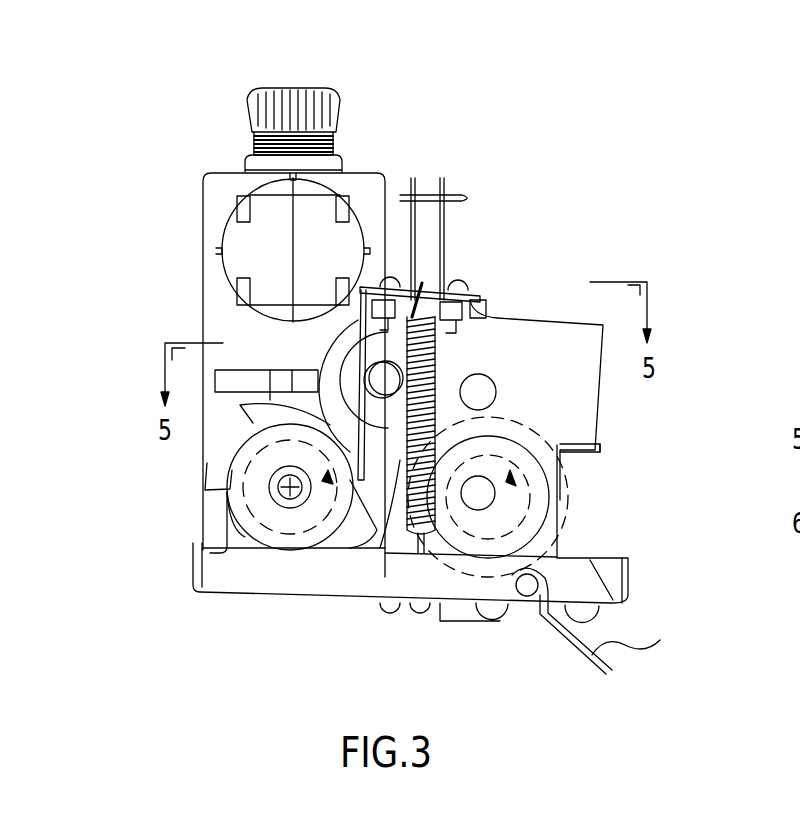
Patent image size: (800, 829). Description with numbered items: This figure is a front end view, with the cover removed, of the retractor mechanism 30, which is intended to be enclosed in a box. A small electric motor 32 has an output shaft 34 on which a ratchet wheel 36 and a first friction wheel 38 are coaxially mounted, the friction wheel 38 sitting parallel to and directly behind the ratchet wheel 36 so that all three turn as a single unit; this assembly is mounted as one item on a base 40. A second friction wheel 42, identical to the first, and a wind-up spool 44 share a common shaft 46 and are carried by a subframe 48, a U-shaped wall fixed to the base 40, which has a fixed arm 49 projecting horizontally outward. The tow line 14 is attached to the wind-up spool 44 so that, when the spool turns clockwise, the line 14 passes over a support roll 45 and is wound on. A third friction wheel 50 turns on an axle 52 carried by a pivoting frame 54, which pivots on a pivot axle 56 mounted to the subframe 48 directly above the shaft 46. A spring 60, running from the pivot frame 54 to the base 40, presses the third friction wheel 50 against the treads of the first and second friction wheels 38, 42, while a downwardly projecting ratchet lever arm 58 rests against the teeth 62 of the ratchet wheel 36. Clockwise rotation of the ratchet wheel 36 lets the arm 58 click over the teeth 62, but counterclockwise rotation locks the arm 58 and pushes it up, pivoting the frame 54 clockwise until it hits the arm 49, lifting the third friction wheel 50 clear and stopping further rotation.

The tow line 14 is at (632, 646).
The retractor mechanism 30 is at (463, 74).
The electric motor 32 is at (223, 172).
The output shaft 34 is at (288, 500).
The ratchet wheel 36 is at (212, 478).
The first friction wheel 38 is at (198, 453).
The base 40 is at (310, 595).
The second friction wheel 42 is at (560, 535).
The wind-up spool 44 is at (560, 485).
The support roll 45 is at (520, 610).
The common shaft 46 is at (475, 503).
The subframe 48 is at (560, 553).
The fixed arm 49 is at (600, 450).
The third friction wheel 50 is at (440, 360).
The axle 52 is at (455, 368).
The pivoting frame 54 is at (590, 388).
The pivot axle 56 is at (437, 410).
The ratchet lever arm 58 is at (437, 389).
The spring 60 is at (400, 457).
The ratchet teeth 62 is at (383, 470).